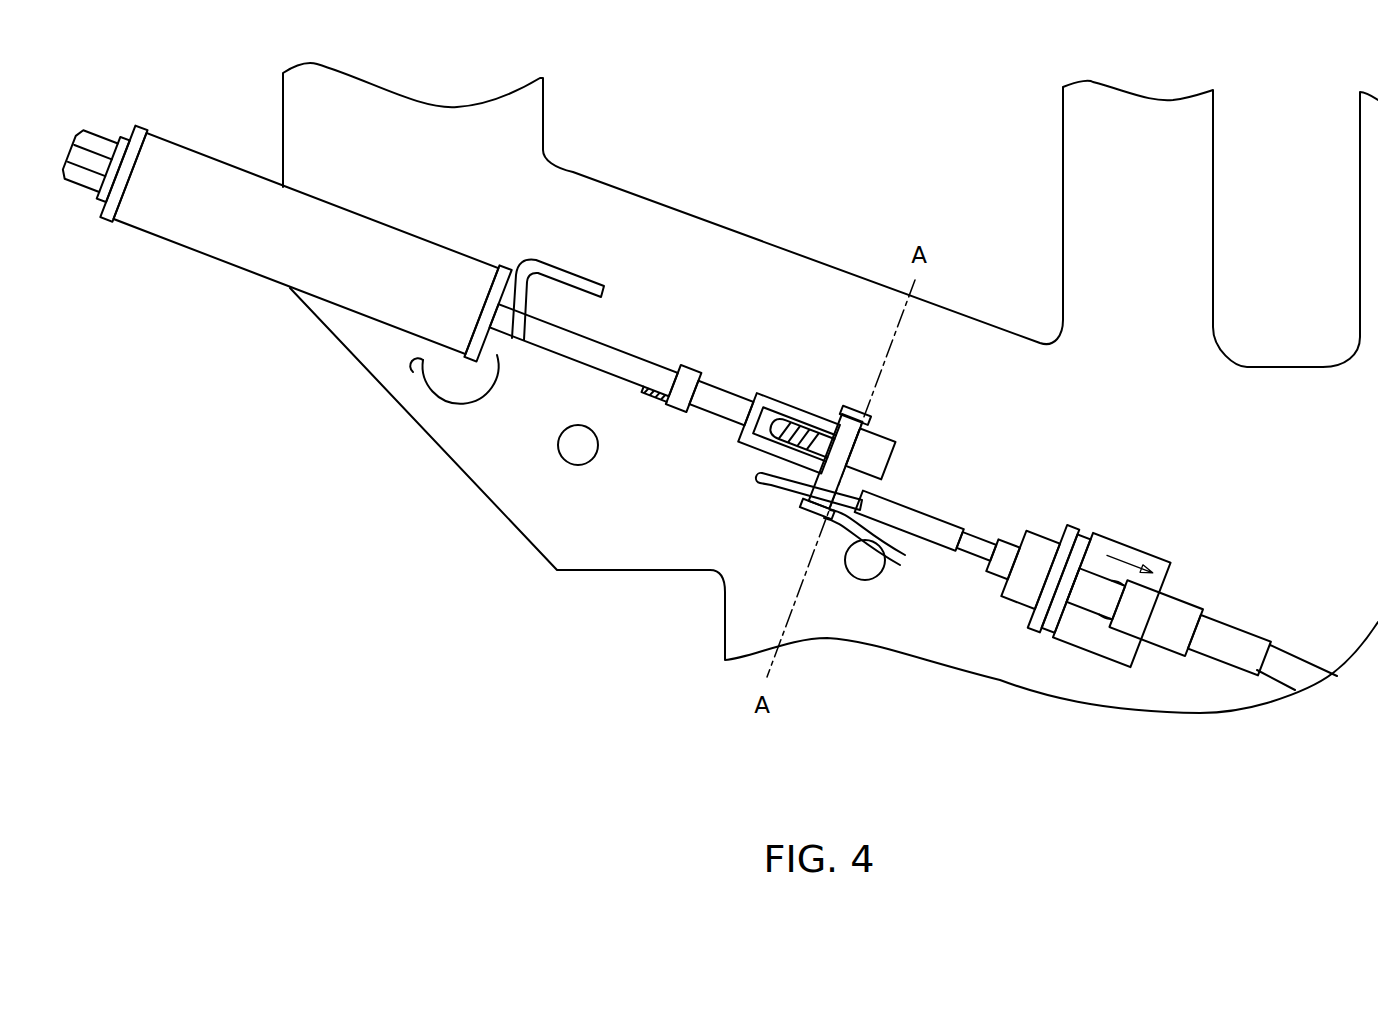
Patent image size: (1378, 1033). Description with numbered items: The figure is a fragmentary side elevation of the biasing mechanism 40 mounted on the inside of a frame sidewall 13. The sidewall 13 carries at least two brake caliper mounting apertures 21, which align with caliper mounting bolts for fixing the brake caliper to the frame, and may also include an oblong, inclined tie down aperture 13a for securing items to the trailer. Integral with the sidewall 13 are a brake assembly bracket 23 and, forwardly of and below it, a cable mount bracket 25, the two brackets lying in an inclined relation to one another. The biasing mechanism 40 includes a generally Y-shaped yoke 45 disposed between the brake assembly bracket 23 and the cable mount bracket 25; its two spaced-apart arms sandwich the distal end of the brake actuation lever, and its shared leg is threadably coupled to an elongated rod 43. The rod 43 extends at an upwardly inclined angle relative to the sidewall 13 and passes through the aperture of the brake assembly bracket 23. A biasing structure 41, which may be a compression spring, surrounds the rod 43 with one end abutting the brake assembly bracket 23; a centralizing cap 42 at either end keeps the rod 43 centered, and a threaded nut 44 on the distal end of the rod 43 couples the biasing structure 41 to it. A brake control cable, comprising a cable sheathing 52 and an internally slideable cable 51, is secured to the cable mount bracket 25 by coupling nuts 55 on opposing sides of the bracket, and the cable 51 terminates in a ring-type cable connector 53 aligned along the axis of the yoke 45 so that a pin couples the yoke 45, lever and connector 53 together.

The sidewall 13 is at (952, 340).
The tie down aperture 13a is at (420, 366).
The brake caliper mounting apertures 21 is at (580, 465).
The brake assembly bracket 23 is at (573, 274).
The cable mount bracket 25 is at (1105, 647).
The biasing mechanism 40 is at (284, 217).
The biasing structure 41 is at (192, 163).
The centralizing cap 42 is at (140, 137).
The rod 43 is at (627, 365).
The nut 44 is at (88, 143).
The yoke 45 is at (777, 404).
The cable 51 is at (988, 537).
The cable sheathing 52 is at (1237, 660).
The cable connector 53 is at (904, 556).
The coupling nuts 55 is at (1084, 560).